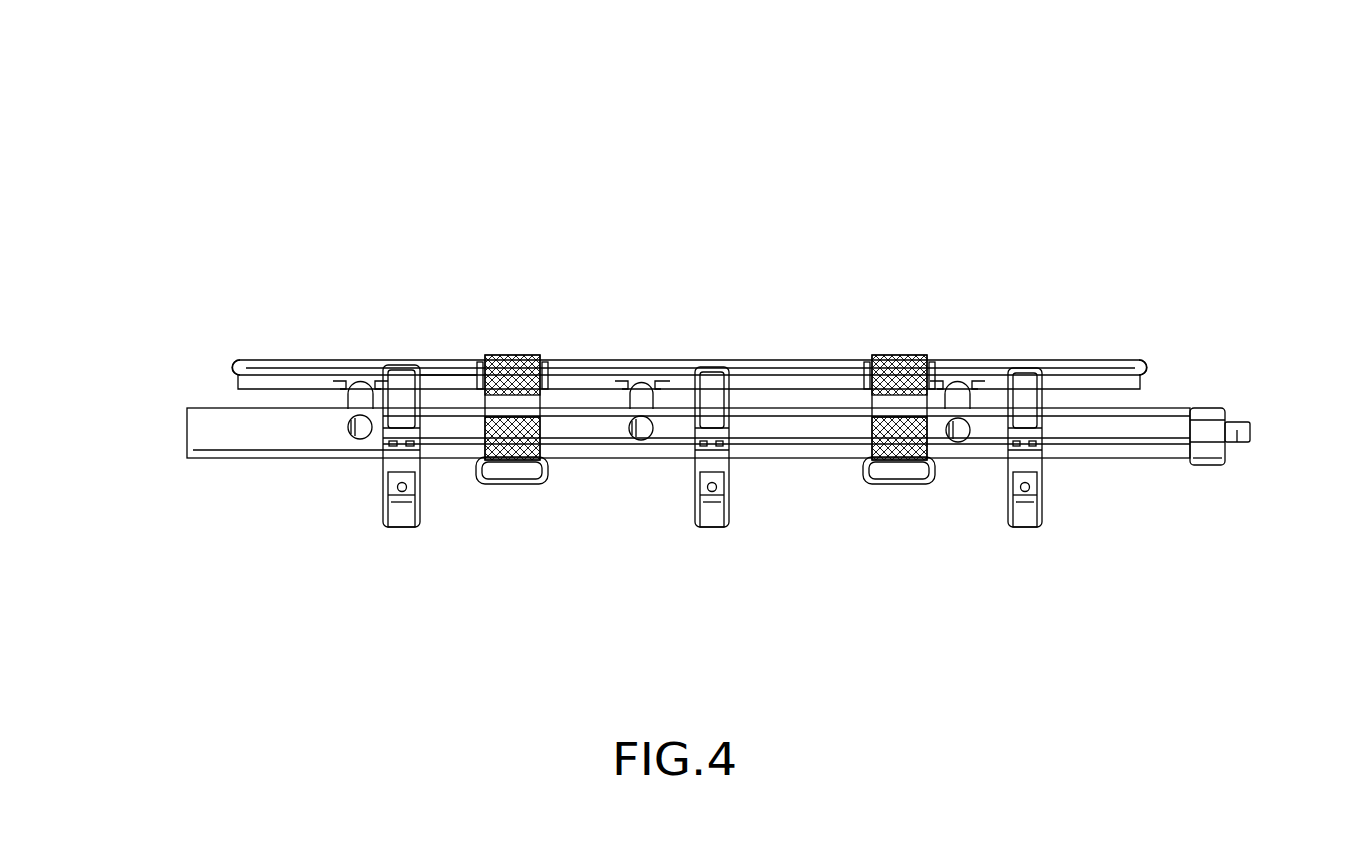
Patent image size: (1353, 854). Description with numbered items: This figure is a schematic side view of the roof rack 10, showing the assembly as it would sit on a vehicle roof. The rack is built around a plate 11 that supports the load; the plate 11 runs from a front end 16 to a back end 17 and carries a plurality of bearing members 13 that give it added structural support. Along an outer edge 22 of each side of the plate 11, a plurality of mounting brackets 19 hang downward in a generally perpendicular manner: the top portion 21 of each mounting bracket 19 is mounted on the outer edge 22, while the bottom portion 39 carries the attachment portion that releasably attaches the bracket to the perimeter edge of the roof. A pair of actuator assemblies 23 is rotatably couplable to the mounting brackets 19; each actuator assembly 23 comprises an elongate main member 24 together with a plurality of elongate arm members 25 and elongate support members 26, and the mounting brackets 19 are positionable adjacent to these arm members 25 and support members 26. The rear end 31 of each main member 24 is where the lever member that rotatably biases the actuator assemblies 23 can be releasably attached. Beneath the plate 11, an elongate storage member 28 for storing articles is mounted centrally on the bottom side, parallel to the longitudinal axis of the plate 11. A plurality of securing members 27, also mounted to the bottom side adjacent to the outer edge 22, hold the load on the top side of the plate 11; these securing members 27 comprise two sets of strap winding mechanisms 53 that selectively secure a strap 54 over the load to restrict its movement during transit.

The roof rack 10 is at (1000, 165).
The plate 11 is at (237, 360).
The bearing members 13 is at (240, 384).
The front end 16 is at (230, 363).
The back end 17 is at (1150, 368).
The mounting brackets 19 is at (387, 446).
The top portion 21 is at (390, 372).
The outer edge 22 is at (435, 373).
The actuator assemblies 23 is at (562, 443).
The elongate main member 24 is at (598, 425).
The elongate arm members 25 is at (635, 405).
The elongate support members 26 is at (645, 435).
The securing members 27 is at (510, 362).
The elongate storage member 28 is at (1133, 460).
The rear end 31 is at (1238, 430).
The bottom portion 39 is at (405, 510).
The strap winding mechanisms 53 is at (512, 432).
The strap 54 is at (633, 403).